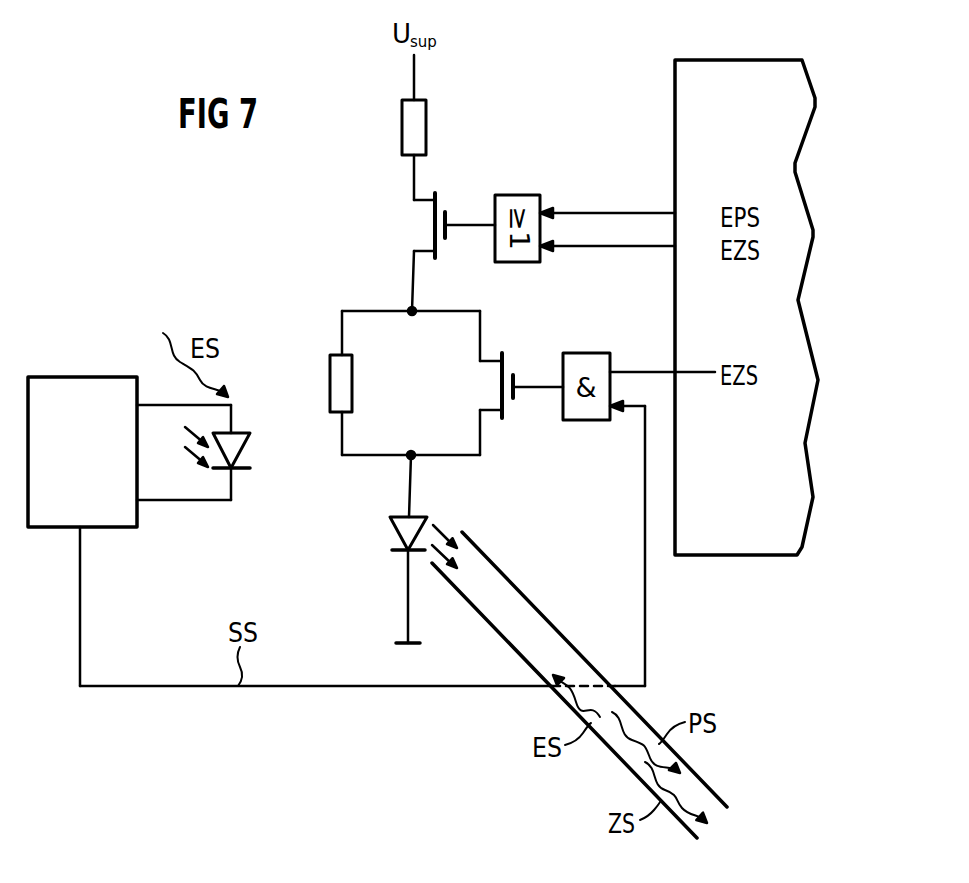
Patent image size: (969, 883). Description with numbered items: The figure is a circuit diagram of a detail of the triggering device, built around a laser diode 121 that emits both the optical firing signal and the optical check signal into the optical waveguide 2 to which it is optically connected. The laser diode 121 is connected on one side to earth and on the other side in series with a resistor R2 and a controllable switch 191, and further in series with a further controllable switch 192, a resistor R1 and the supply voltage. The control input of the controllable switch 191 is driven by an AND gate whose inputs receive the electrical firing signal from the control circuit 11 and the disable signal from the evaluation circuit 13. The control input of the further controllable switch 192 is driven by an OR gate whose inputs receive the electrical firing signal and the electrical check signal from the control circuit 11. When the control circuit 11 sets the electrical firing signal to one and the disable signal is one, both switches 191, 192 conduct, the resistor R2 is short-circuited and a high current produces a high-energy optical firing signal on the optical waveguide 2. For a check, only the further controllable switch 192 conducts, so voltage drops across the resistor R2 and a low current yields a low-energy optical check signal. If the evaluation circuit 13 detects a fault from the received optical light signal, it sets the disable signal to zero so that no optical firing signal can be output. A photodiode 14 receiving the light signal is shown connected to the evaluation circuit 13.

The optical waveguide 2 is at (553, 622).
The control circuit 11 is at (676, 112).
The evaluation circuit 13 is at (87, 377).
The photodiode 14 is at (247, 433).
The laser diode 121 is at (392, 530).
The controllable switch 191 is at (483, 386).
The further controllable switch 192 is at (407, 225).
The resistor R1 is at (402, 123).
The resistor R2 is at (330, 360).